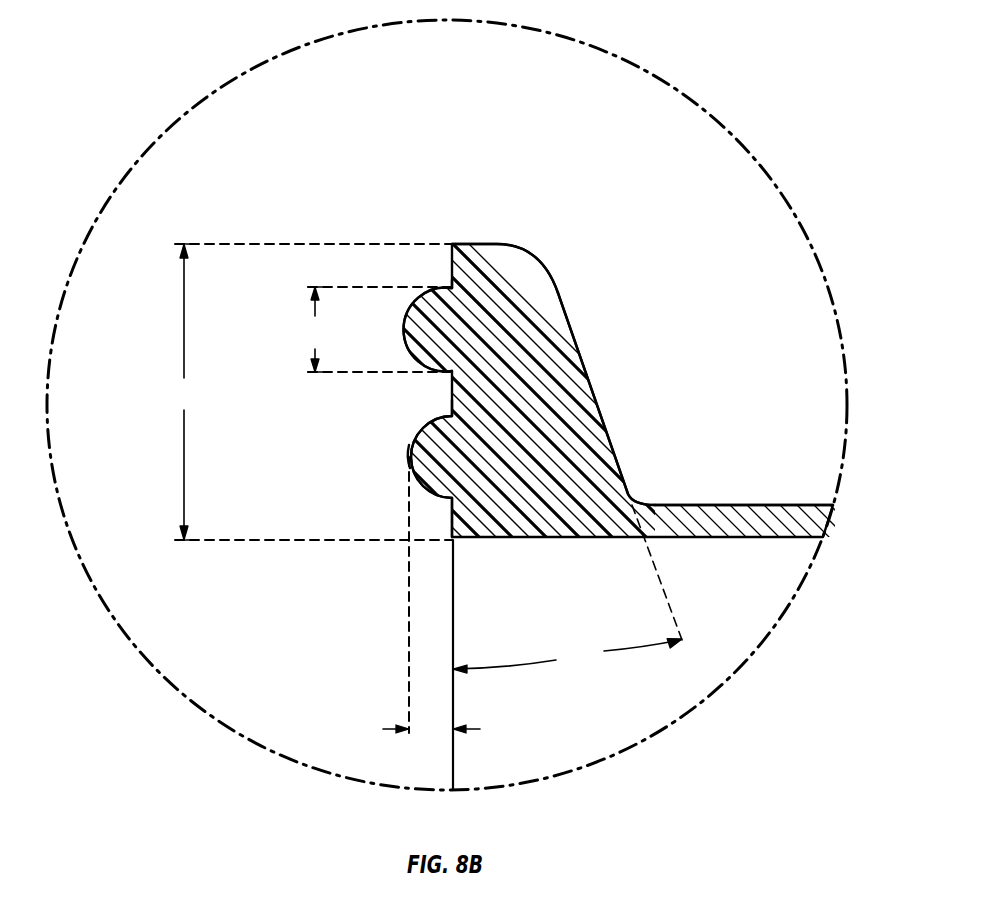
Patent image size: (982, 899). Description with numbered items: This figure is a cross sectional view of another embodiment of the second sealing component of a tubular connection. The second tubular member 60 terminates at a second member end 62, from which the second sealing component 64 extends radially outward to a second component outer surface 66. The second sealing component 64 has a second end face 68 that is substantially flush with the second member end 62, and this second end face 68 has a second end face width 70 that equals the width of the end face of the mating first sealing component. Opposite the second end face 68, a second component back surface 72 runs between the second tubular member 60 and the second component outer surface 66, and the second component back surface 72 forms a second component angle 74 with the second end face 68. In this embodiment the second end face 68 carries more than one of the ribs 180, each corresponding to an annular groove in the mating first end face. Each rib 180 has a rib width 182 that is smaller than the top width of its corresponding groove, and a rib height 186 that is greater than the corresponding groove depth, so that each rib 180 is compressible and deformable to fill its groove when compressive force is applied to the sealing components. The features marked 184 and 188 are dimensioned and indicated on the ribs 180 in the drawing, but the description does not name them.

The second tubular member 60 is at (723, 522).
The second member end 62 is at (452, 506).
The second sealing component 64 is at (580, 408).
The second component outer surface 66 is at (494, 243).
The second end face 68 is at (450, 284).
The second end face width 70 is at (313, 392).
The second component back surface 72 is at (577, 347).
The second component angle 74 is at (567, 590).
The ribs 180 is at (428, 334).
The rib width 182 is at (374, 329).
The recess between protrusions 184 is at (440, 418).
The rib height 186 is at (384, 727).
The protrusion outer surface 188 is at (408, 458).